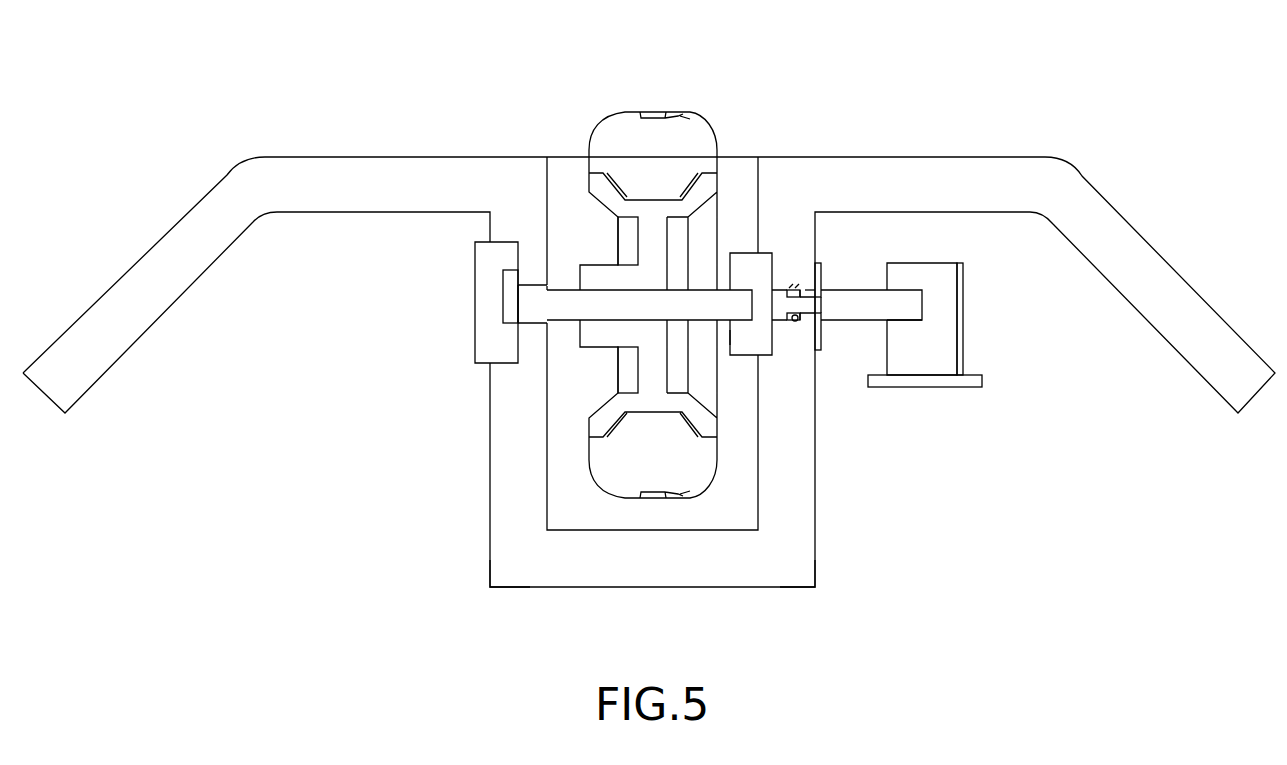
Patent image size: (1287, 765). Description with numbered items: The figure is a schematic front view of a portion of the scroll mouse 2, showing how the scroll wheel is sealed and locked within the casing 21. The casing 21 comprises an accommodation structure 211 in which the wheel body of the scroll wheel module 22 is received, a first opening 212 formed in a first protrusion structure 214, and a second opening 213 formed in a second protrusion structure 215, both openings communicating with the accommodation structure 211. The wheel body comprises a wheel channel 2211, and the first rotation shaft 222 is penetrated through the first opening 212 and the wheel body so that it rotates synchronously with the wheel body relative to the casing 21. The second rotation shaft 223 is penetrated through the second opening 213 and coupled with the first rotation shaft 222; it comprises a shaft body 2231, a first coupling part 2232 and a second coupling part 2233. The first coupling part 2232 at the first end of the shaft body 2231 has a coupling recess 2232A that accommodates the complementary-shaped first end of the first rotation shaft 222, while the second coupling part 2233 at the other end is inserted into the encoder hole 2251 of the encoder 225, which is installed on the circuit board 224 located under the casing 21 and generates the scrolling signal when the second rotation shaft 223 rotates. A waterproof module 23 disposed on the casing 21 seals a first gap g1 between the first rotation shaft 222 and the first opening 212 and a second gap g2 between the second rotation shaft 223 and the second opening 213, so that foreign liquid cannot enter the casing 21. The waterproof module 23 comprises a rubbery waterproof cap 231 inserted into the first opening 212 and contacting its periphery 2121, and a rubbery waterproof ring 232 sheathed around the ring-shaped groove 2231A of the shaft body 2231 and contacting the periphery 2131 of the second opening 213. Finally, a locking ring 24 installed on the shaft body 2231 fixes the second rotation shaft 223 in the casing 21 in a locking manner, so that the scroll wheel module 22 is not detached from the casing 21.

The scroll mouse 2 is at (428, 47).
The casing 21 is at (364, 149).
The accommodation structure 211 is at (572, 150).
The first opening 212 is at (488, 305).
The periphery of the first opening 2121 is at (536, 273).
The second opening 213 is at (816, 330).
The periphery of the second opening 2131 is at (803, 283).
The first protrusion structure 214 is at (490, 540).
The second protrusion structure 215 is at (815, 508).
The scroll wheel module 22 is at (662, 104).
The wheel channel 2211 is at (616, 330).
The first rotation shaft 222 is at (568, 303).
The second rotation shaft 223 is at (285, 530).
The shaft body 2231 is at (838, 305).
The ring-shaped groove 2231A is at (811, 282).
The first coupling part 2232 is at (755, 273).
The coupling recess 2232A is at (732, 333).
The second coupling part 2233 is at (902, 305).
The circuit board 224 is at (972, 378).
The encoder 225 is at (948, 325).
The encoder hole 2251 is at (909, 329).
The waterproof module 23 is at (285, 418).
The waterproof cap 231 is at (478, 258).
The waterproof ring 232 is at (819, 262).
The locking ring 24 is at (818, 282).
The first gap g1 is at (541, 273).
The second gap g2 is at (788, 332).